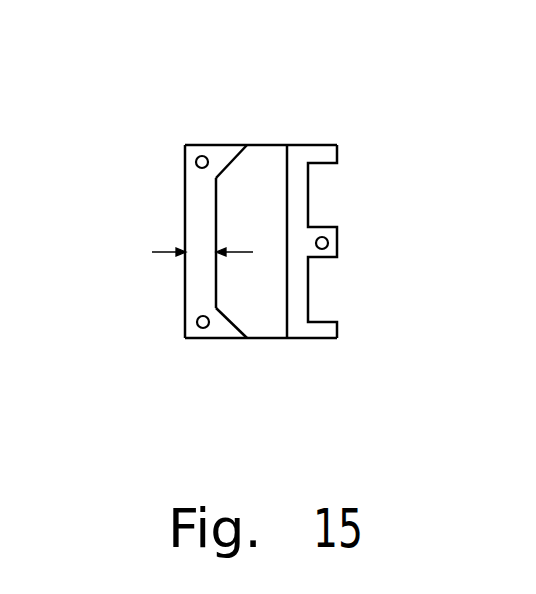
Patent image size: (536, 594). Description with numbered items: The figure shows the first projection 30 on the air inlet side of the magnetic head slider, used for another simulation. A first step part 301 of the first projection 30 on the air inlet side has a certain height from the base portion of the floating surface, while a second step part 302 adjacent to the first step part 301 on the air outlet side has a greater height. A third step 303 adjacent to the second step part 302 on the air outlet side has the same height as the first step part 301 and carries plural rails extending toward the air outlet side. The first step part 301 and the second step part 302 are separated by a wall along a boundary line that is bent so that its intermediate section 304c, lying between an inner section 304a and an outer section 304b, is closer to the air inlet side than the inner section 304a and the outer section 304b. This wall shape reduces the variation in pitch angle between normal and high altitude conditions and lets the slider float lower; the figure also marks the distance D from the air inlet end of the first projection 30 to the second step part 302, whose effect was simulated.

The first projection 30 is at (296, 124).
The first step part 301 is at (193, 202).
The second step part 302 is at (151, 250).
The third step 303 is at (295, 290).
The inner section 304a is at (233, 325).
The outer section 304b is at (232, 163).
The intermediate section 304c is at (216, 223).